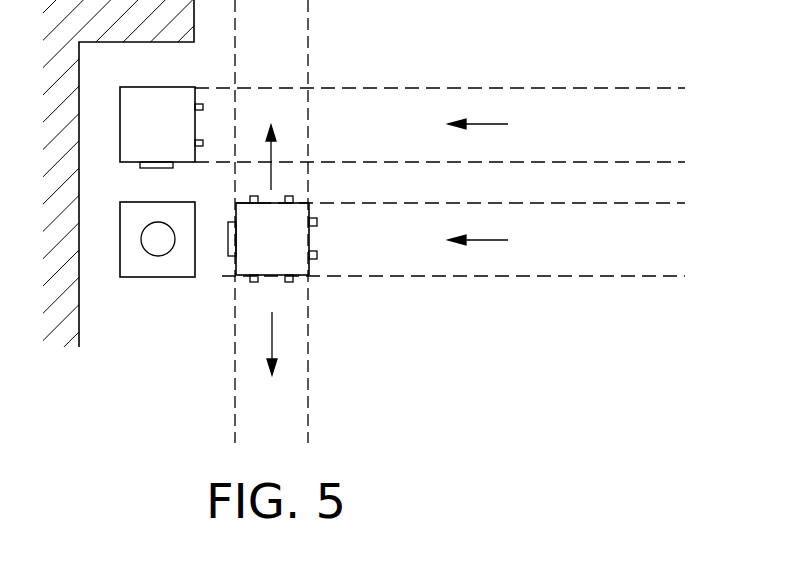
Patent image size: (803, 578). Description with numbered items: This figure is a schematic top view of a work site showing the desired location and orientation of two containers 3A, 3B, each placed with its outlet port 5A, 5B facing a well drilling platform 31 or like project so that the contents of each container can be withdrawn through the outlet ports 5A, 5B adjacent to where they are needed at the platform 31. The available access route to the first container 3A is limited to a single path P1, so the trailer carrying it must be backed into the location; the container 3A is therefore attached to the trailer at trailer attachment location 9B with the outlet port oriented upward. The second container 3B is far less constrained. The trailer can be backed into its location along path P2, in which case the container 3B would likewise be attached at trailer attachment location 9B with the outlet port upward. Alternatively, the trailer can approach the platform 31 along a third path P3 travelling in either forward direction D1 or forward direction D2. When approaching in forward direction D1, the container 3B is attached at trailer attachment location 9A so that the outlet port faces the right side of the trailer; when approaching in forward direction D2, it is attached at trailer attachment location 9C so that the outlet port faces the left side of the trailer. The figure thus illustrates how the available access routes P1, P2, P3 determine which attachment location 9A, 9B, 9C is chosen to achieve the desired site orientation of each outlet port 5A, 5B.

The container 3A is at (157, 124).
The container 3B is at (272, 239).
The outlet port 5A is at (145, 168).
The outlet port 5B is at (228, 250).
The trailer attachment location 9A is at (200, 138).
The trailer attachment location 9B is at (317, 255).
The trailer attachment location 9C is at (288, 195).
The well drilling platform 31 is at (130, 278).
The forward direction D1 is at (272, 340).
The forward direction D2 is at (271, 152).
The path P1 is at (573, 112).
The path P2 is at (573, 253).
The path P3 is at (277, 400).